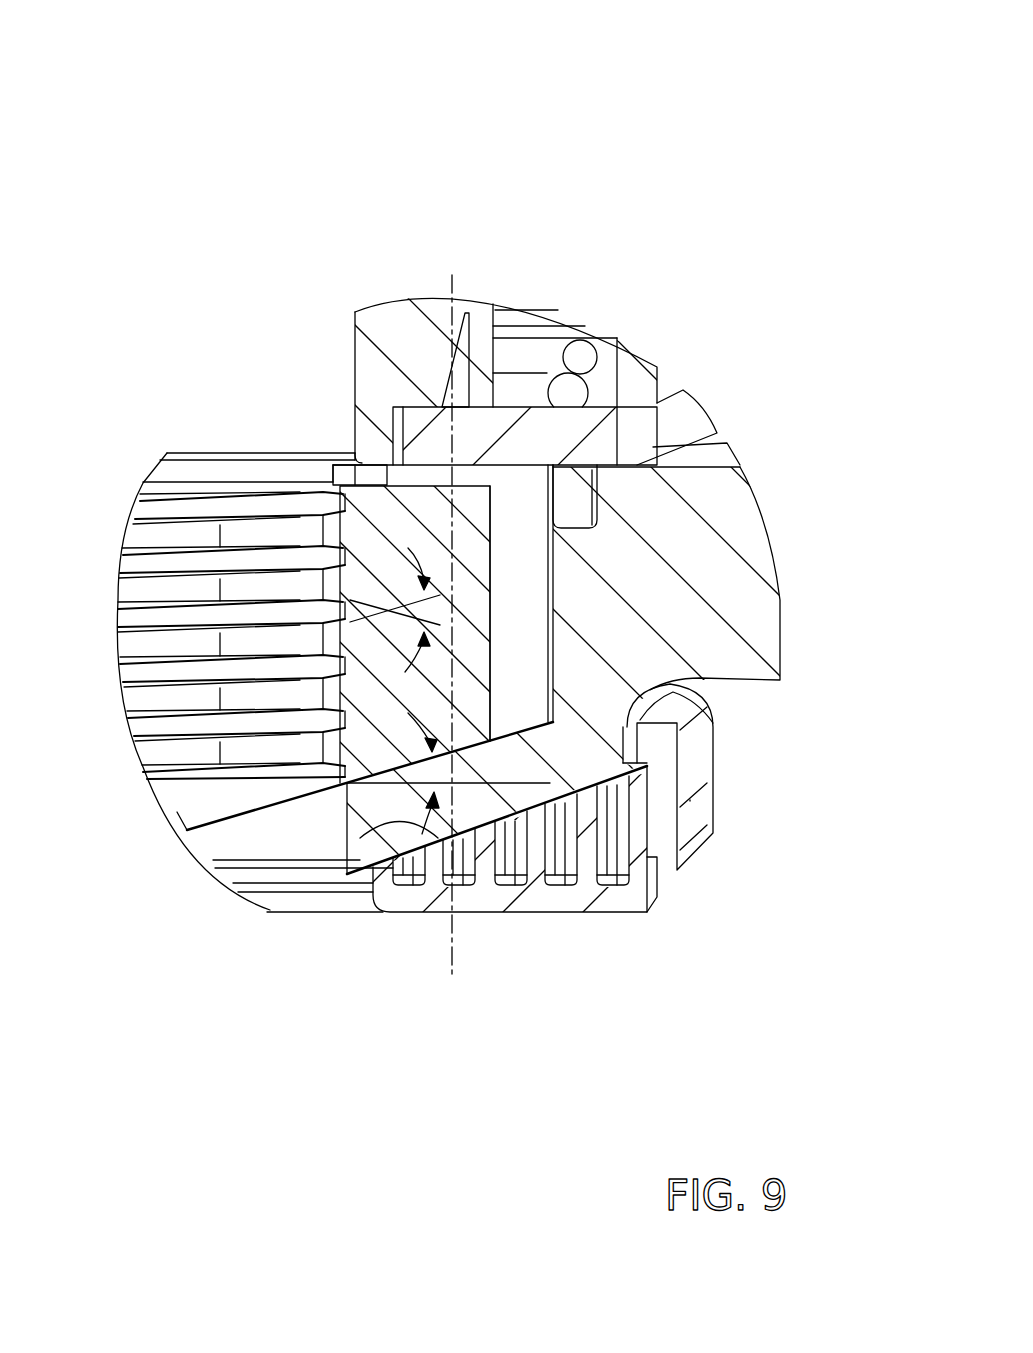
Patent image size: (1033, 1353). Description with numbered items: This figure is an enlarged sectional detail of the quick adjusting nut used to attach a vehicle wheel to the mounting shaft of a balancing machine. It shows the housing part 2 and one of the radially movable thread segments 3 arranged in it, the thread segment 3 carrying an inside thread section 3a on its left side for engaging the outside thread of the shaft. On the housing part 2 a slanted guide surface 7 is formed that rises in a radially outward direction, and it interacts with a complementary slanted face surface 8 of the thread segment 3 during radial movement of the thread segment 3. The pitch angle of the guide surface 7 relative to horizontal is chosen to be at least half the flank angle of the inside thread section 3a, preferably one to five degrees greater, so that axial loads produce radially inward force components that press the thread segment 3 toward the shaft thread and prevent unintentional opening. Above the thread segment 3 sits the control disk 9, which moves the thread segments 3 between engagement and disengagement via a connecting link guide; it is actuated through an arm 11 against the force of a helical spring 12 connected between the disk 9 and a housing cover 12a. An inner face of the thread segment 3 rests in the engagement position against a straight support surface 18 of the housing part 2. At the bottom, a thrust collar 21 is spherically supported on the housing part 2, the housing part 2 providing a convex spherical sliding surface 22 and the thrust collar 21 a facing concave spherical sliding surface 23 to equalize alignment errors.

The housing part 2 is at (740, 530).
The thread segment 3 is at (400, 505).
The inside thread section 3a is at (153, 567).
The guide surface 7 is at (507, 730).
The face surface 8 is at (255, 812).
The control disk 9 is at (403, 335).
The arm 11 is at (677, 427).
The helical spring 12 is at (538, 353).
The housing cover 12a is at (430, 440).
The support surface 18 is at (177, 812).
The thrust collar 21 is at (698, 827).
The convex spherical sliding surface 22 is at (545, 813).
The concave spherical sliding surface 23 is at (437, 838).